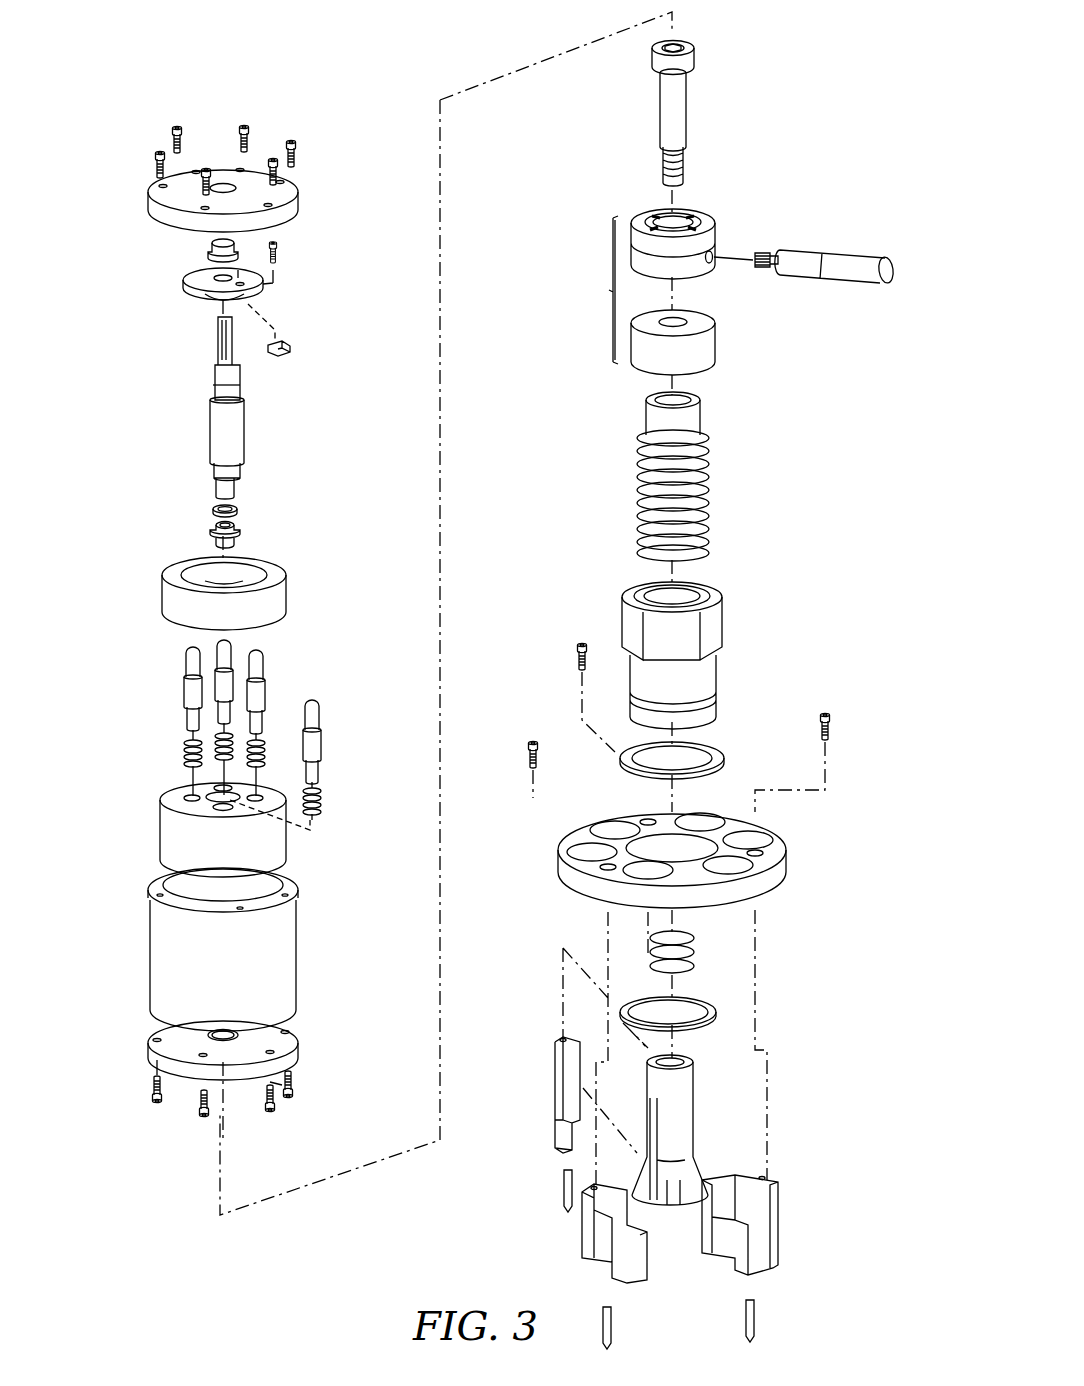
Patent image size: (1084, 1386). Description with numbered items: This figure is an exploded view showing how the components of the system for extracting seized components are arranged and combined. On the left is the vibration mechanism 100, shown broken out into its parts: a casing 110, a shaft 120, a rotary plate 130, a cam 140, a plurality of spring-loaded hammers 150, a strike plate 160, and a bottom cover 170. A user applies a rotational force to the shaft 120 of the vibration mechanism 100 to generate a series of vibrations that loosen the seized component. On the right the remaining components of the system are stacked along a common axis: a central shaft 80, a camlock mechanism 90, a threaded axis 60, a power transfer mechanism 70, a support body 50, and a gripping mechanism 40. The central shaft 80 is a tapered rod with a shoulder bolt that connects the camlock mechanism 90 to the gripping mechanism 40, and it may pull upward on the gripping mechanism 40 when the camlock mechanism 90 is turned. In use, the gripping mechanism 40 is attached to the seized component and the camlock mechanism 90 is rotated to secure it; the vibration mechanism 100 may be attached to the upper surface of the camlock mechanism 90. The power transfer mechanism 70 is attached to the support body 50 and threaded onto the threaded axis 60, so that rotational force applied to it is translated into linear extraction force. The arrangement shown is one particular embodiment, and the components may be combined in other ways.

The vibration mechanism 100 is at (353, 262).
The casing 110 is at (150, 950).
The shaft 120 is at (208, 432).
The rotary plate 130 is at (190, 278).
The cam 140 is at (292, 352).
The spring-loaded hammers 150 is at (183, 666).
The strike plate 160 is at (288, 593).
The bottom cover 170 is at (298, 1046).
The central shaft 80 is at (688, 108).
The camlock mechanism 90 is at (734, 292).
The threaded axis 60 is at (712, 490).
The power transfer mechanism 70 is at (718, 668).
The support body 50 is at (788, 868).
The gripping mechanism 40 is at (697, 1112).